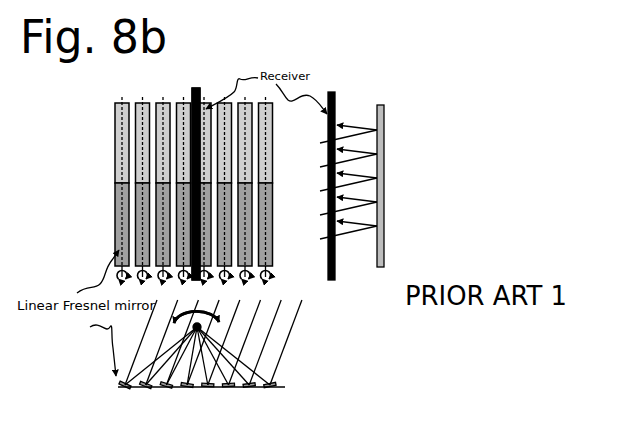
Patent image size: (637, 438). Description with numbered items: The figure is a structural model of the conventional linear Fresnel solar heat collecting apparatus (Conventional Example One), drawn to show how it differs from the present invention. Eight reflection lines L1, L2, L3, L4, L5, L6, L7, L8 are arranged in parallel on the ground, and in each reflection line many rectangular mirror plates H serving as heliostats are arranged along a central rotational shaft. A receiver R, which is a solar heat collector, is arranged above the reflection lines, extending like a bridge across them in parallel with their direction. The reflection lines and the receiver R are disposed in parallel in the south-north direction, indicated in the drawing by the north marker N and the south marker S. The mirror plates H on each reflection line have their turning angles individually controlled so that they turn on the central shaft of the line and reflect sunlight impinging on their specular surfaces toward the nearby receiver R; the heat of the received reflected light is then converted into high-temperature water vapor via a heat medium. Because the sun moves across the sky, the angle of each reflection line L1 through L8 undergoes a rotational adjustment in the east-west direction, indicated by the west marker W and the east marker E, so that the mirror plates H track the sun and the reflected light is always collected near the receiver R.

The north direction N is at (196, 177).
The south direction S is at (196, 191).
The receiver R is at (328, 128).
The mirror plate H is at (384, 175).
The west direction W is at (189, 321).
The east direction E is at (204, 323).
The reflection line L1 is at (156, 245).
The reflection line L2 is at (167, 245).
The reflection line L3 is at (177, 245).
The reflection line L4 is at (198, 245).
The reflection line L5 is at (218, 245).
The reflection line L6 is at (229, 245).
The reflection line L7 is at (239, 245).
The reflection line L8 is at (249, 245).